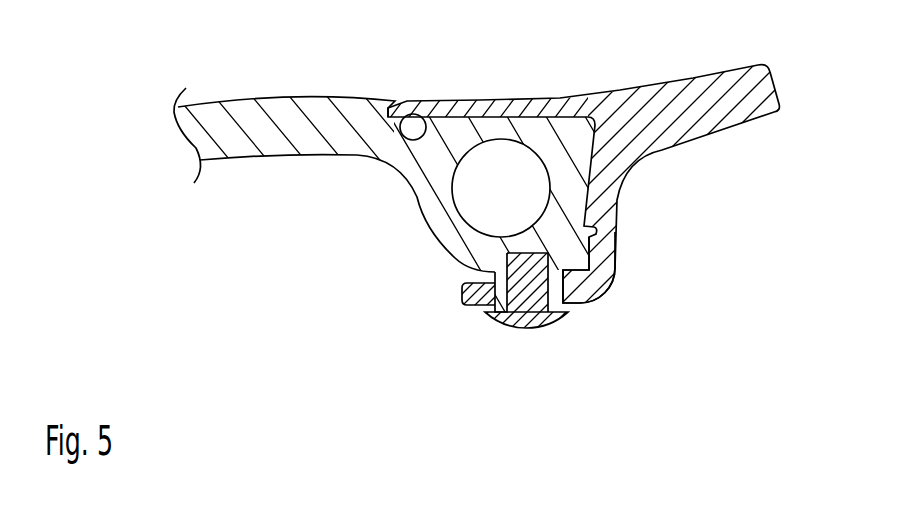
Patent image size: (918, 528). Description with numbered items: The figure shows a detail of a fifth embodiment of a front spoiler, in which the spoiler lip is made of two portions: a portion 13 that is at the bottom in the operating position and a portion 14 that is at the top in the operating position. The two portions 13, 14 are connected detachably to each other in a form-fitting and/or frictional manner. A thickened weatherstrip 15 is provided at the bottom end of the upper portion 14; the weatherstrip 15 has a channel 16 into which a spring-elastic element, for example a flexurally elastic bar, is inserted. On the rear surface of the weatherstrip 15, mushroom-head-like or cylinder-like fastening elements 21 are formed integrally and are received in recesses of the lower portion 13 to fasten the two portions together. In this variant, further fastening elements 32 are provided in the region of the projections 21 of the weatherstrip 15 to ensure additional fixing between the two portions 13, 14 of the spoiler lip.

The portion of the spoiler lip at the bottom in the operating position 13 is at (676, 67).
The portion of the spoiler lip at the top in the operating position 14 is at (279, 80).
The weatherstrip 15 is at (443, 223).
The channel 16 is at (500, 158).
The fastening elements 21 is at (505, 306).
The further fastening elements 32 is at (528, 313).